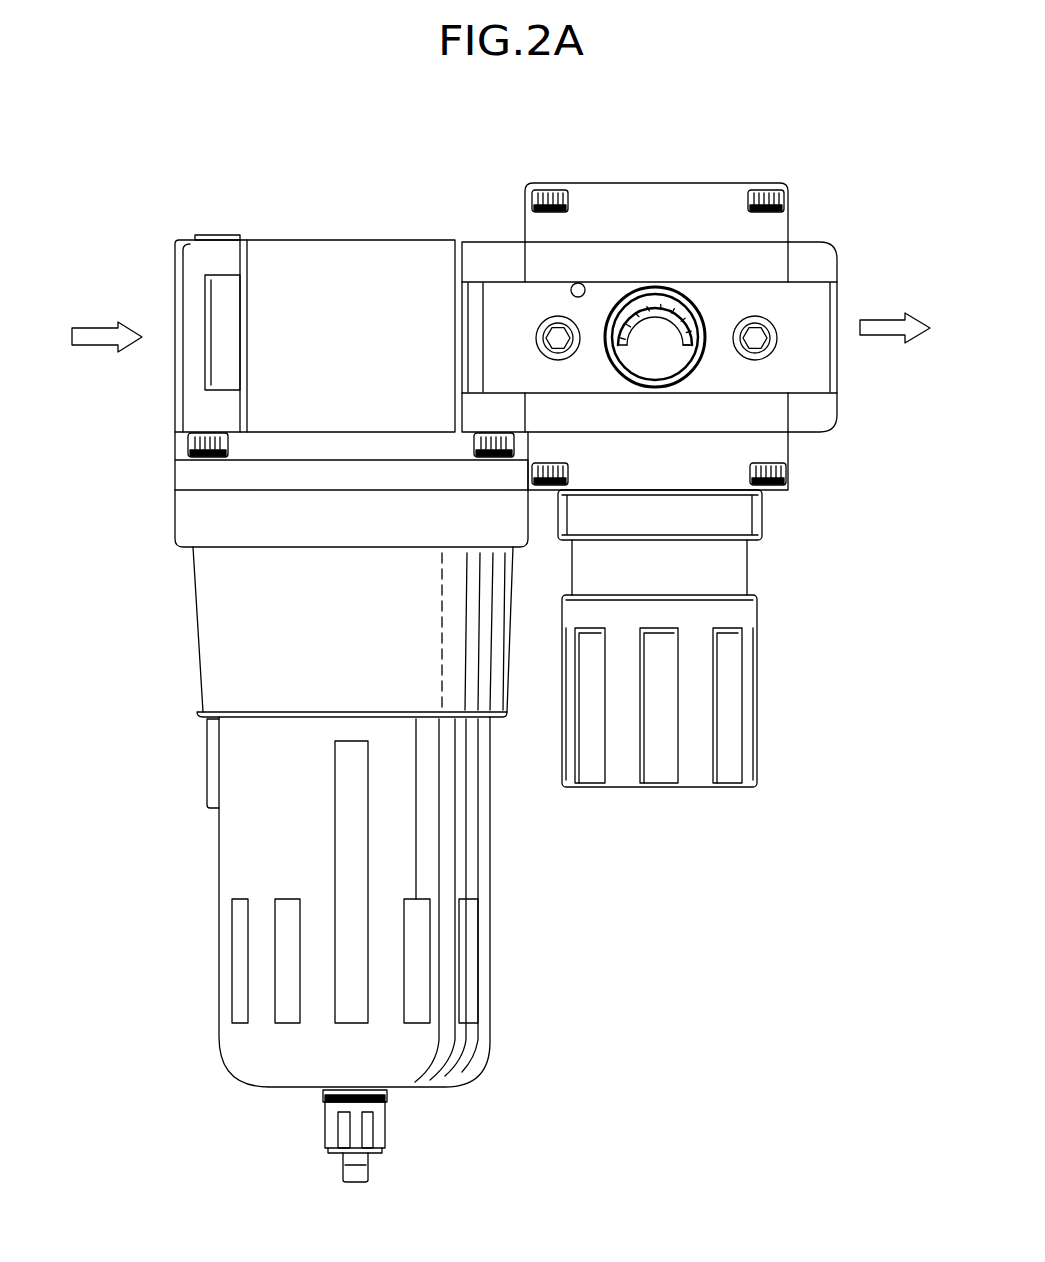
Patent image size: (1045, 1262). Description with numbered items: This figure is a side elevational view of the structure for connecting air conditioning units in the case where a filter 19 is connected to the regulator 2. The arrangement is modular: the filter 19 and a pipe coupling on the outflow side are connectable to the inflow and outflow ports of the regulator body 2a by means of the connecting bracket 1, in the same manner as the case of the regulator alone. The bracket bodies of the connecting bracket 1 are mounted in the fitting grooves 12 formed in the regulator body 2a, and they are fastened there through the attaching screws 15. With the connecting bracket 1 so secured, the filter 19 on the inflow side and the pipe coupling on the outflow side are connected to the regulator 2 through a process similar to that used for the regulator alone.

The connecting bracket 1 is at (518, 317).
The regulator 2 is at (798, 175).
The regulator body 2a is at (772, 408).
The fitting groove 12 is at (574, 283).
The attaching screw 15 is at (775, 333).
The filter 19 is at (185, 592).